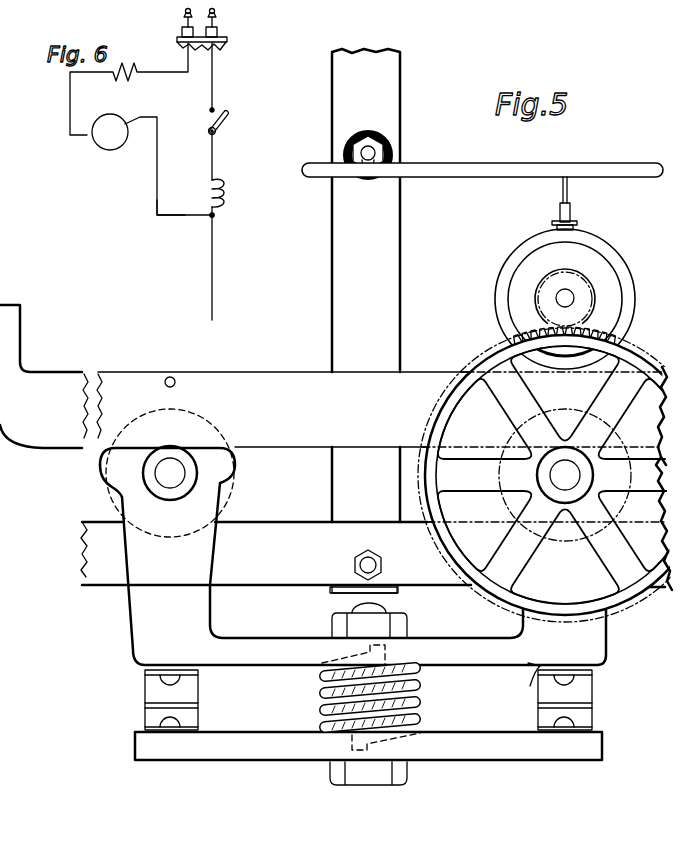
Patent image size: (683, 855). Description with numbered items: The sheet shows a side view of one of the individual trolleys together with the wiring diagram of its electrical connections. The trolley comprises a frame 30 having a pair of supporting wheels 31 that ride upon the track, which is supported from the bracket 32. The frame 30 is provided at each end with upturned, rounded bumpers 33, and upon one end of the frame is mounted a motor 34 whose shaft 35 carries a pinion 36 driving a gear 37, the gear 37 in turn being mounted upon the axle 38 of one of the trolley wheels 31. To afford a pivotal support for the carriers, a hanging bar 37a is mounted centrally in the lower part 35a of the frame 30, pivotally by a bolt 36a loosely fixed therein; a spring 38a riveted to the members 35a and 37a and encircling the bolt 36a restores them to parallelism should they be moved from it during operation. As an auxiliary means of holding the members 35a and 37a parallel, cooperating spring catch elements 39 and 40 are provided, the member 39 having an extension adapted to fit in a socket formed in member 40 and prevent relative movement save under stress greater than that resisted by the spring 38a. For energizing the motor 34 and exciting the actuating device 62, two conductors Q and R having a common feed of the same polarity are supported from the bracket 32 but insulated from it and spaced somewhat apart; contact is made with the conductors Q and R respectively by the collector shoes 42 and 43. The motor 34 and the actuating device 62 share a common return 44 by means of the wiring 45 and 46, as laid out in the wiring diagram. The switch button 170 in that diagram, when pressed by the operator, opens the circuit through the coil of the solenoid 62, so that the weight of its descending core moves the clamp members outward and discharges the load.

In FIG. 6, the conductor Q is at (185, 12).
In FIG. 5, the conductor Q is at (496, 168).
In FIG. 6, the conductor R is at (217, 12).
In FIG. 6, the collector shoe 42 is at (184, 40).
In FIG. 6, the collector shoe 43 is at (226, 42).
In FIG. 6, the motor 34 is at (118, 141).
In FIG. 5, the motor 34 is at (517, 261).
In FIG. 6, the switch button 170 is at (210, 121).
In FIG. 6, the actuating device (solenoid) 62 is at (209, 183).
In FIG. 6, the wiring 46 is at (214, 215).
In FIG. 6, the wiring 45 is at (160, 216).
In FIG. 6, the common return 44 is at (214, 272).
In FIG. 5, the upturned bumper 33 is at (18, 327).
In FIG. 5, the frame 30 is at (272, 388).
In FIG. 5, the bracket 32 is at (7, 551).
In FIG. 5, the supporting wheel 31 is at (220, 480).
In FIG. 5, the shaft 35 is at (567, 296).
In FIG. 5, the pinion 36 is at (589, 317).
In FIG. 5, the gear 37 is at (613, 331).
In FIG. 5, the axle 38 is at (563, 472).
In FIG. 5, the lower part of the frame 35a is at (280, 653).
In FIG. 5, the bolt 36a is at (378, 608).
In FIG. 5, the hanging bar 37a is at (238, 748).
In FIG. 5, the spring 38a is at (418, 694).
In FIG. 5, the spring catch element 39 is at (152, 688).
In FIG. 5, the spring catch element 40 is at (146, 716).